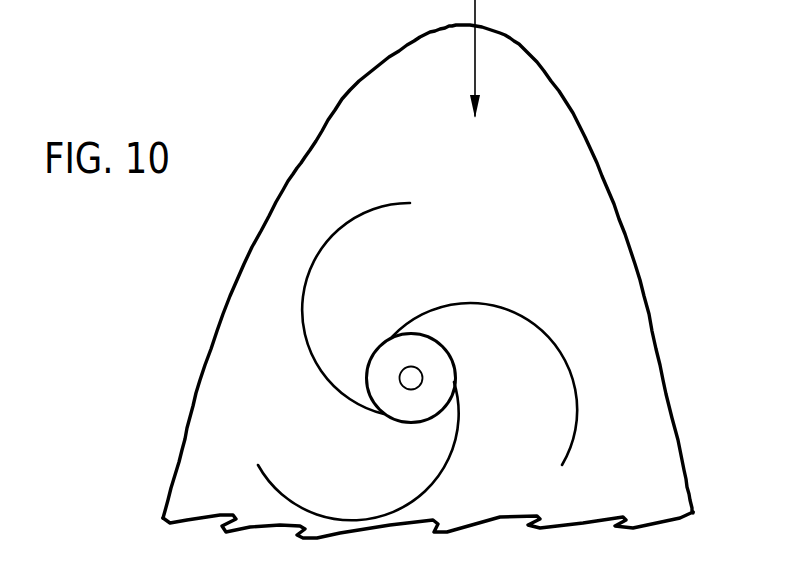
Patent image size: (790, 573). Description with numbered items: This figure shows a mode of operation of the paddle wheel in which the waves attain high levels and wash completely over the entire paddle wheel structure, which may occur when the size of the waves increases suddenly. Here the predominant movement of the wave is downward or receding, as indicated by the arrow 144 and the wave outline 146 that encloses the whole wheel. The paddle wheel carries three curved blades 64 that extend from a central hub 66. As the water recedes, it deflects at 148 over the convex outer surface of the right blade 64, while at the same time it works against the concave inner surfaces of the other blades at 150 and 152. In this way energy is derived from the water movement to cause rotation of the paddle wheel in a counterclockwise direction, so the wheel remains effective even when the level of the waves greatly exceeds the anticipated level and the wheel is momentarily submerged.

The arrow 144 is at (476, 7).
The wave outline 146 is at (574, 112).
The blade 64 is at (438, 344).
The central hub 66 is at (459, 357).
The water deflection 148 is at (489, 306).
The water working location 150 is at (307, 340).
The water working location 152 is at (279, 486).